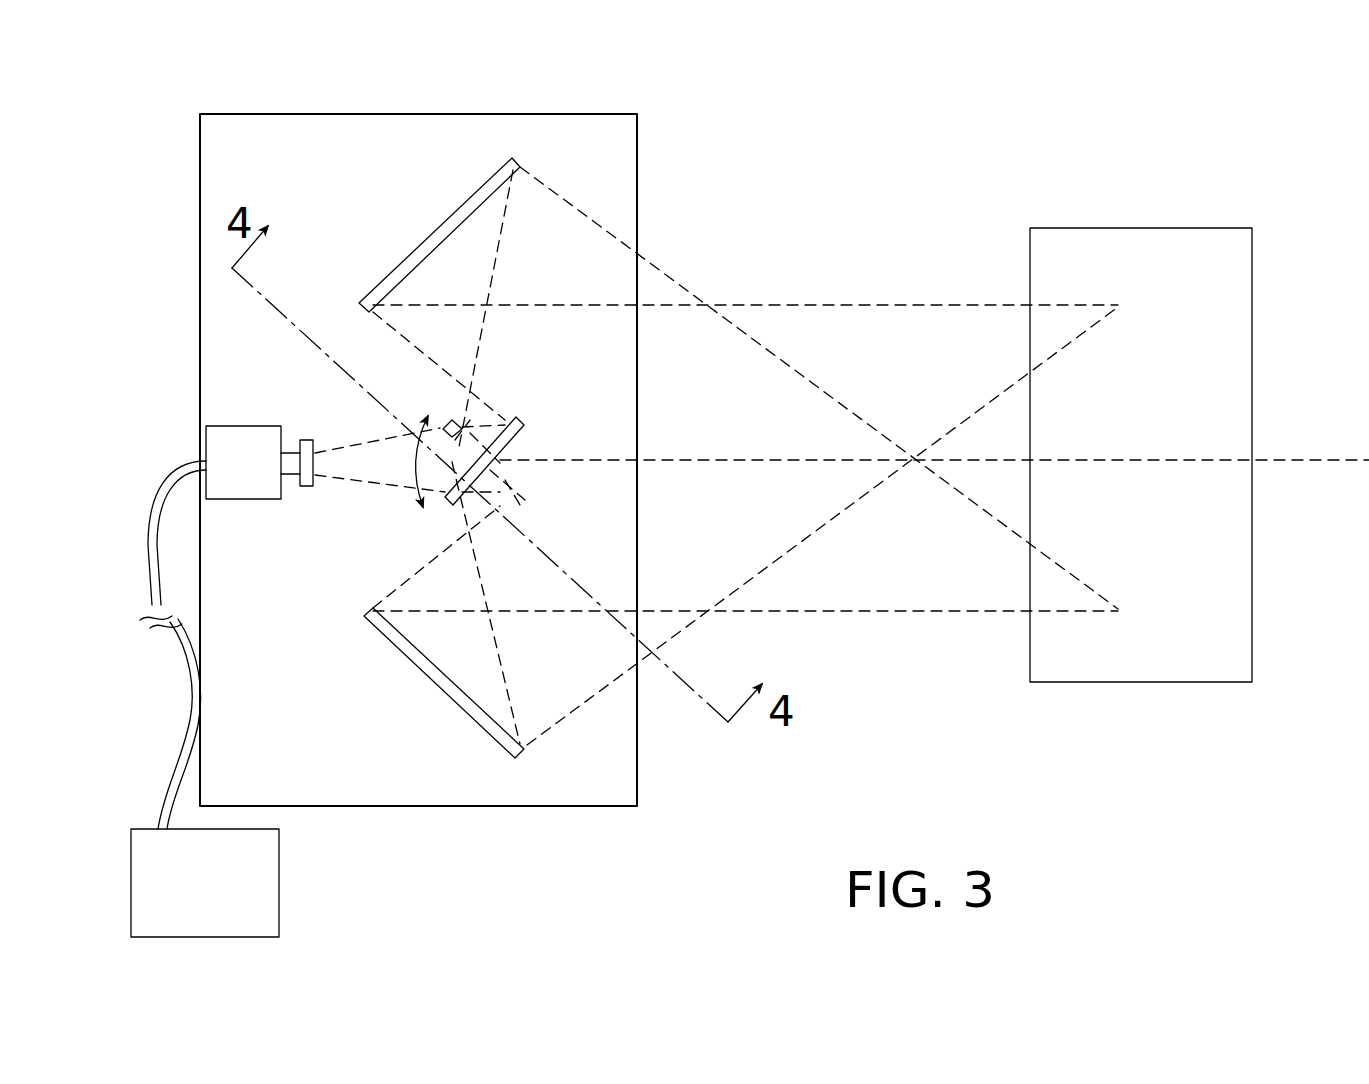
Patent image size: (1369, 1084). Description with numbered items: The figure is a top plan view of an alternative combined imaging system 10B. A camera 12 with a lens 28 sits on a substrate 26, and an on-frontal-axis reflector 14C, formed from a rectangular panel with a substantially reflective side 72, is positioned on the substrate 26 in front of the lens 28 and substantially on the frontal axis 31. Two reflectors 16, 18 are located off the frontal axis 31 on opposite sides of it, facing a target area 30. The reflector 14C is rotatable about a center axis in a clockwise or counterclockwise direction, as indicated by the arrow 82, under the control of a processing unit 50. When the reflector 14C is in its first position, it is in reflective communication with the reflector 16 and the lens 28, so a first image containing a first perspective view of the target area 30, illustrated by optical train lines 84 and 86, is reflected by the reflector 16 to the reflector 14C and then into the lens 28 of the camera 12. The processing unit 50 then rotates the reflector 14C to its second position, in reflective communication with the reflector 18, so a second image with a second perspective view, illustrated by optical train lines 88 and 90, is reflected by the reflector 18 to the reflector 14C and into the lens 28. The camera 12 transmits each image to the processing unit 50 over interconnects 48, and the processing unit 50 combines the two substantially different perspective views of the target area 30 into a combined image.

The combined imaging system 10B is at (683, 115).
The camera 12 is at (259, 478).
The on-frontal-axis reflector 14C is at (556, 482).
The reflector 16 is at (438, 229).
The reflector 18 is at (396, 648).
The substrate 26 is at (632, 778).
The lens 28 is at (326, 459).
The target area 30 is at (1116, 228).
The frontal axis 31 is at (1332, 465).
The interconnects 48 is at (146, 506).
The processing unit 50 is at (220, 899).
The substantially reflective side 72 is at (497, 440).
The arrow 82 is at (413, 473).
The optical train line 84 is at (873, 300).
The optical train line 86 is at (826, 392).
The optical train line 88 is at (828, 525).
The optical train line 90 is at (927, 613).